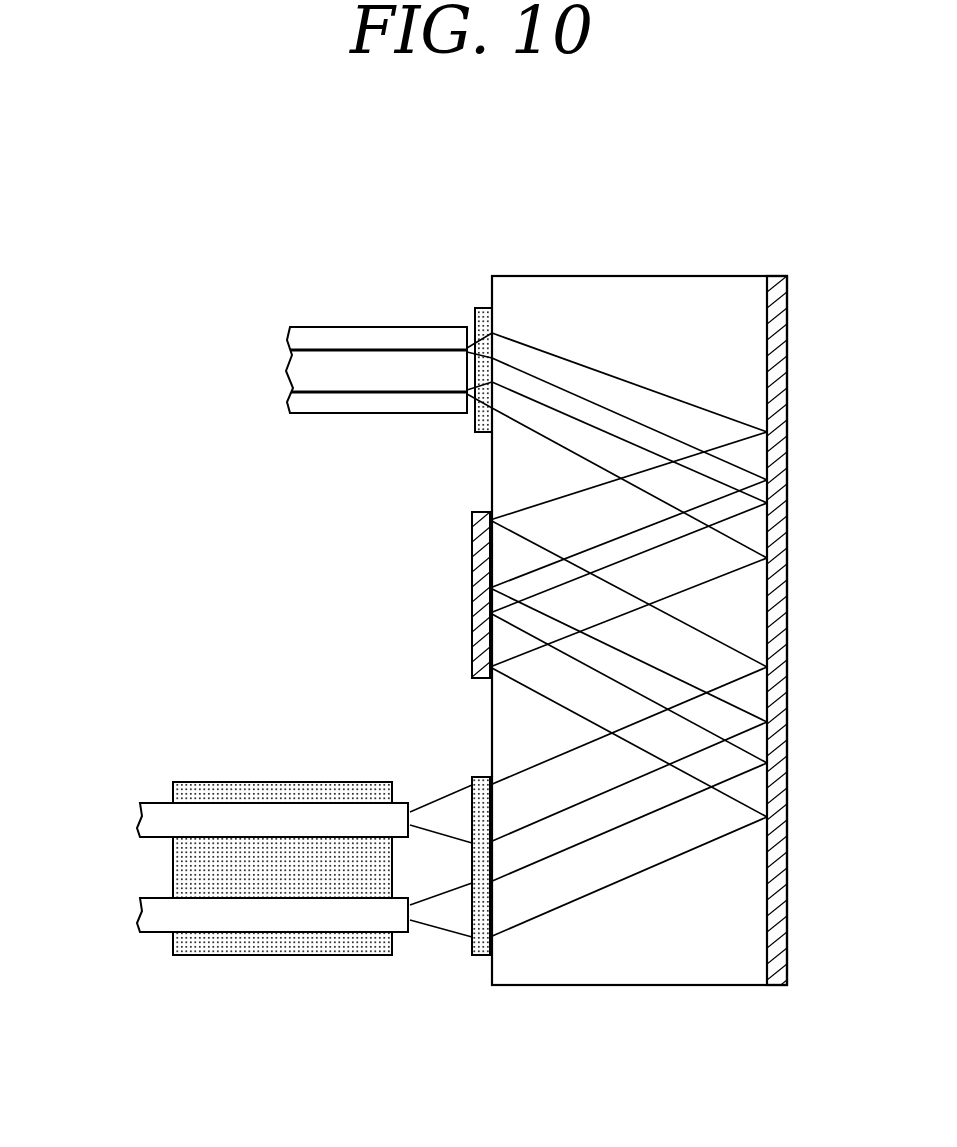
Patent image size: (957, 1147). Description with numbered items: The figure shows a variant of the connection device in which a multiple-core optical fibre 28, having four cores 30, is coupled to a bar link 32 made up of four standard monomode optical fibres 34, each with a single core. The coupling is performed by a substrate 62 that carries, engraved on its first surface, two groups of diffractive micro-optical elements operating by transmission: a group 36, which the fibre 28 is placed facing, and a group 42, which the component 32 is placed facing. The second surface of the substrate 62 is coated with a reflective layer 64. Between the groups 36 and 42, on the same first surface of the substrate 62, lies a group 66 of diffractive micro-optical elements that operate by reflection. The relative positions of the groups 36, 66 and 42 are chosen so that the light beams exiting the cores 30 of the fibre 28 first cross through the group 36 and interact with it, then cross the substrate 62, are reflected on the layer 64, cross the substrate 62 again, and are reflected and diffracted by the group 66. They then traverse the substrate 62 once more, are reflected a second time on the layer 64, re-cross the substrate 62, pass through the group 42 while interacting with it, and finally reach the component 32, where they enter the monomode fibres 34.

The multiple-core optical fibre 28 is at (366, 316).
The cores 30 is at (388, 352).
The bar link 32 is at (251, 758).
The standard monomode optical fibres 34 is at (152, 823).
The group of diffractive micro-optical elements 36 is at (476, 298).
The group of diffractive micro-optical elements 42 is at (456, 954).
The substrate 62 is at (618, 300).
The reflective layer 64 is at (790, 365).
The group of diffractive micro-optical elements operating by reflection 66 is at (452, 602).